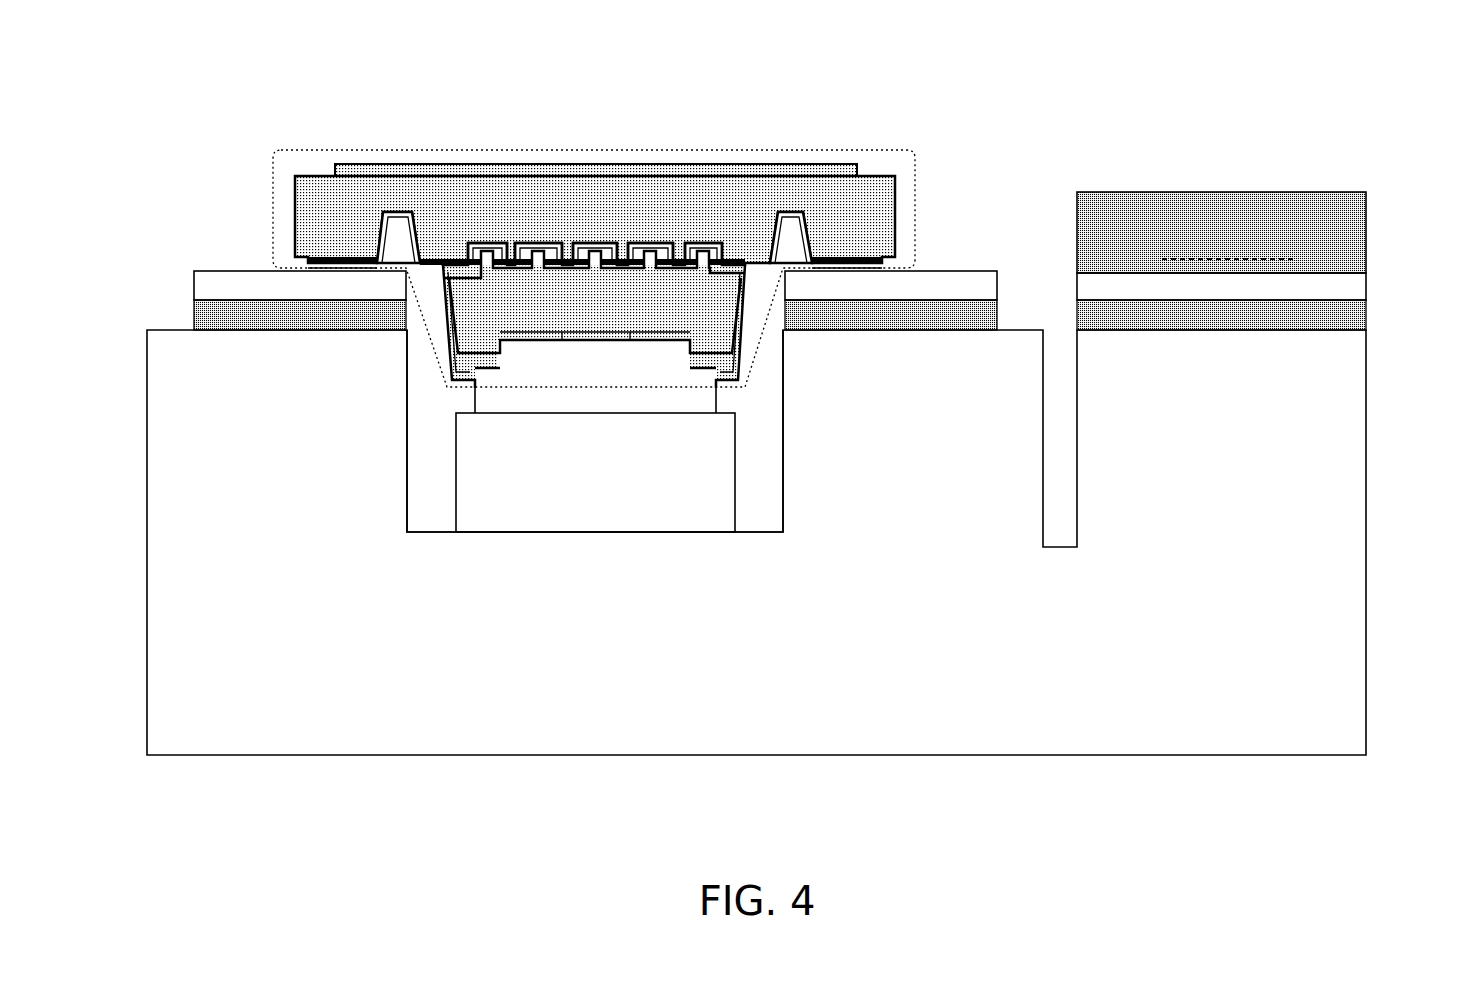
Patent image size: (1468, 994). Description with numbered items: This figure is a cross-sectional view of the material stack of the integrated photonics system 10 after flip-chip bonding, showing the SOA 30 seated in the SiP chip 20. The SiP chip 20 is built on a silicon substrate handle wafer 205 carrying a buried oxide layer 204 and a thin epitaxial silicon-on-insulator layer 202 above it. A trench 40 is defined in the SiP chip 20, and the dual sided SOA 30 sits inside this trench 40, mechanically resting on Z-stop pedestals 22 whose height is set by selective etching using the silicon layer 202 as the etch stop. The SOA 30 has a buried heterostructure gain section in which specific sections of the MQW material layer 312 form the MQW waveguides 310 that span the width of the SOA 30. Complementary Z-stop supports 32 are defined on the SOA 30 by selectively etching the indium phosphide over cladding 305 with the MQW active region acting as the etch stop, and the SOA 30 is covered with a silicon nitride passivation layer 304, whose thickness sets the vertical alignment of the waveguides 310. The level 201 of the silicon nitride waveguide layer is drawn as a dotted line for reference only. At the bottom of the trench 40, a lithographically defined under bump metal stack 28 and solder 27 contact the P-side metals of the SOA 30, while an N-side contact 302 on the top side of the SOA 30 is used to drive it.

The integrated photonics system 10 is at (168, 93).
The SiP chip 20 is at (147, 466).
The Z-stop pedestals 22 is at (217, 270).
The solder 27 is at (700, 397).
The under bump metal stack 28 is at (700, 473).
The SOA 30 is at (383, 150).
The Z-stop supports 32 is at (338, 240).
The trench 40 is at (432, 484).
The level of the SiN waveguide layer 201 is at (1253, 259).
The SOI layer 202 is at (207, 285).
The buried oxide layer 204 is at (200, 318).
The Si substrate handle wafer 205 is at (762, 695).
The N-side contact 302 is at (700, 170).
The SiN passivation layer 304 is at (336, 265).
The InP over cladding 305 is at (628, 302).
The MQW waveguides 310 is at (511, 258).
The MQW material layer 312 is at (745, 258).